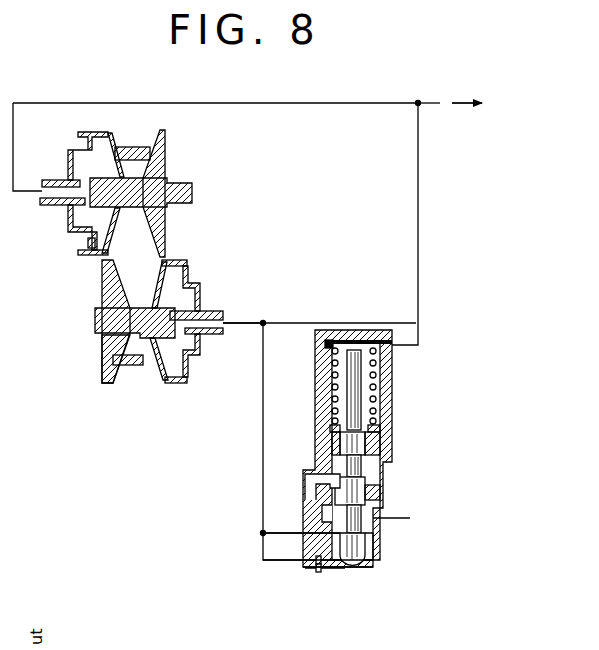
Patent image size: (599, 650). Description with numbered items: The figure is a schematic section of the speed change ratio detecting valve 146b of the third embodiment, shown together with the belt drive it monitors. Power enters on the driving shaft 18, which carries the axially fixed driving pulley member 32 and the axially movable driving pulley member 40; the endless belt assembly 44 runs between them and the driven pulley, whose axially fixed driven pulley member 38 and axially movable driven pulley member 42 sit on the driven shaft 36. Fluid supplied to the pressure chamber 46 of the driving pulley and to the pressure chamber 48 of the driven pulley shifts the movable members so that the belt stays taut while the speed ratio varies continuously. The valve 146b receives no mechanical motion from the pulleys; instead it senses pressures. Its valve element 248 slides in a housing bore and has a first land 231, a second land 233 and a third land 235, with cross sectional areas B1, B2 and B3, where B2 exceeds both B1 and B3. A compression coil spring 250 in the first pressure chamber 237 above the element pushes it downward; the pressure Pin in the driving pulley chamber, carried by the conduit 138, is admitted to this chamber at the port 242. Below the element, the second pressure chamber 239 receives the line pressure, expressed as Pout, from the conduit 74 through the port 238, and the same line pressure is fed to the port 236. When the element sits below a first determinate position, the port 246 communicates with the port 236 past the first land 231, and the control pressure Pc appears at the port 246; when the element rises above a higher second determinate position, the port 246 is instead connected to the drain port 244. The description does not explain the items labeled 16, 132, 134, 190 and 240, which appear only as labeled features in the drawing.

The driven pulley 16 is at (133, 385).
The driving shaft 18 is at (188, 193).
The axially fixed driving pulley member 32 is at (167, 138).
The driven shaft 36 is at (102, 320).
The axially fixed driven pulley member 38 is at (103, 350).
The axially movable driving pulley member 40 is at (115, 138).
The axially movable driven pulley member 42 is at (147, 373).
The endless belt assembly 44 is at (122, 372).
The pressure chamber of driving pulley assembly 46 is at (101, 218).
The pressure chamber of driven pulley assembly 48 is at (167, 282).
The conduit 74 is at (277, 323).
The shift control valve 132 is at (510, 106).
The line pressure regulator valve 134 is at (510, 106).
The conduit 138 is at (369, 103).
The speed change ratio detecting valve 146b is at (342, 592).
The control pressure passage 190 is at (425, 518).
The first land 231 is at (377, 578).
The second land 233 is at (383, 498).
The third land 235 is at (385, 455).
The port 236 is at (315, 532).
The first pressure chamber 237 is at (382, 378).
The port 238 is at (317, 577).
The second pressure chamber 239 is at (357, 587).
The orifice 240 is at (304, 546).
The port 242 is at (392, 350).
The drain port 244 is at (313, 485).
The port 246 is at (383, 528).
The valve element 248 is at (328, 453).
The compression coil spring 250 is at (345, 342).
The cross sectional area of first land B1 is at (392, 560).
The cross sectional area of second land B2 is at (378, 483).
The cross sectional area of third land B3 is at (385, 430).
The hydraulic pressure in driving pulley pressure chamber Pin is at (368, 343).
The control pressure Pc is at (390, 518).
The line pressure Pout is at (295, 627).